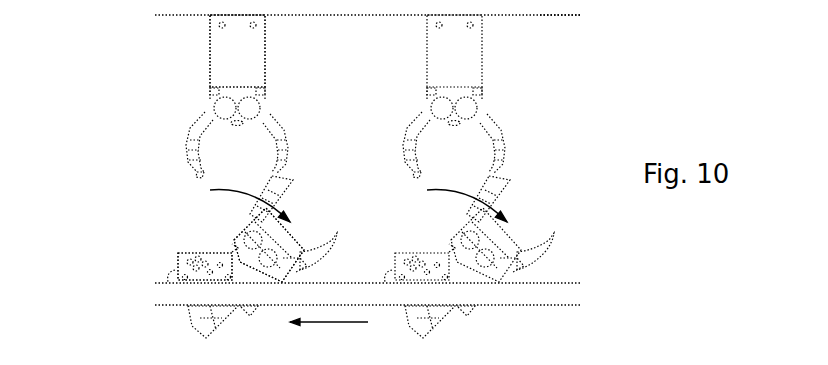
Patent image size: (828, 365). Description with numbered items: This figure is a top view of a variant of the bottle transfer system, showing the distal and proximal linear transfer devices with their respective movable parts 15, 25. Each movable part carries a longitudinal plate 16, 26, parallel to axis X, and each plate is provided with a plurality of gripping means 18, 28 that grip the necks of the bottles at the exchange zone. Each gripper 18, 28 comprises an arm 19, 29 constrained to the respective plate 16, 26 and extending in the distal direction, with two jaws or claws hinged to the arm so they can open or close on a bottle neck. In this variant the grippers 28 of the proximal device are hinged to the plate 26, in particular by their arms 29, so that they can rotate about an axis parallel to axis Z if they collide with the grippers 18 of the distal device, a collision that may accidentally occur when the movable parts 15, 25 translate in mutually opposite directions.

The movable part 15 is at (507, 17).
The longitudinal plate 16 is at (557, 5).
The gripping means 18 is at (168, 117).
The arm 19 is at (230, 63).
The movable part 25 is at (508, 310).
The longitudinal plate 26 is at (562, 298).
The gripping means 28 is at (195, 208).
The arm 29 is at (232, 250).